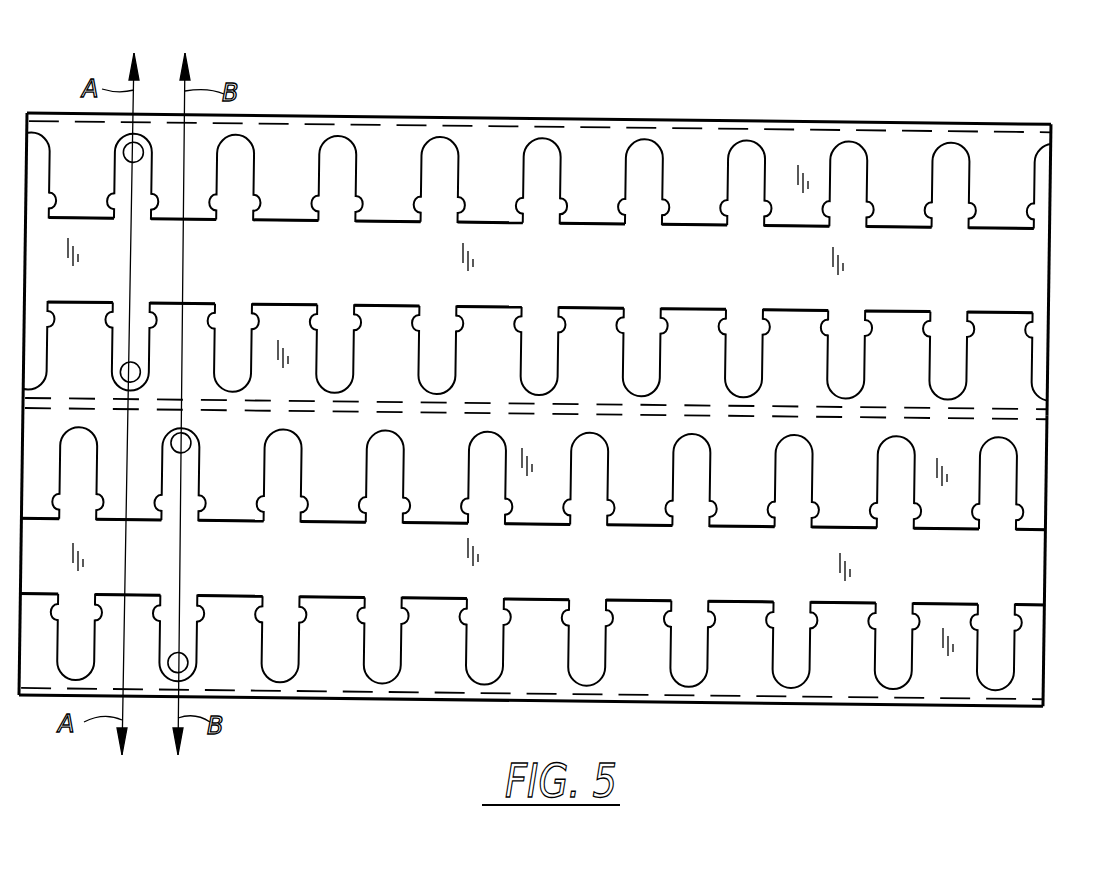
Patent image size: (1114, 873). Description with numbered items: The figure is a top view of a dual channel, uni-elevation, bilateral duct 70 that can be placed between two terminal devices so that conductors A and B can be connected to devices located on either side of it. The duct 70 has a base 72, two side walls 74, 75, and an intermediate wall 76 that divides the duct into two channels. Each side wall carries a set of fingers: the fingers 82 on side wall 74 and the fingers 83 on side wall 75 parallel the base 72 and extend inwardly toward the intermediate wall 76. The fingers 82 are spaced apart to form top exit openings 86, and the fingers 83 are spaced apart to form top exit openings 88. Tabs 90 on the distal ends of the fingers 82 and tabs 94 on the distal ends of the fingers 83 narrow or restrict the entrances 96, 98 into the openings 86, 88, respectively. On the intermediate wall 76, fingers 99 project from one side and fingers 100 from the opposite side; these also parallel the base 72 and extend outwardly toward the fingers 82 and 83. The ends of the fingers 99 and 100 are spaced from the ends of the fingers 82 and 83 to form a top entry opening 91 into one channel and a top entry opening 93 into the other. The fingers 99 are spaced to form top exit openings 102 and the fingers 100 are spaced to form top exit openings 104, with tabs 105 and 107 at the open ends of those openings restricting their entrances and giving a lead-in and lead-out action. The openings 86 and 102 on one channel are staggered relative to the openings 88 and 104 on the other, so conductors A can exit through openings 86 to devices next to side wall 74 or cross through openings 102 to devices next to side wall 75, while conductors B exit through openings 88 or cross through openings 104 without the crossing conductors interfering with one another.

The dual channel, uni-elevation, bilateral duct 70 is at (1050, 60).
The base 72 is at (848, 566).
The side wall 74 is at (720, 122).
The side wall 75 is at (548, 700).
The intermediate wall 76 is at (1005, 424).
The fingers 82 is at (802, 232).
The fingers 83 is at (548, 598).
The top exit openings 86 is at (943, 150).
The top exit openings 88 is at (887, 691).
The tabs 90 is at (836, 208).
The top entry opening 91 is at (1032, 271).
The top entry opening 93 is at (1020, 559).
The tabs 94 is at (800, 612).
The entrance 96 is at (950, 227).
The entrance 98 is at (690, 605).
The fingers 99 is at (672, 305).
The fingers 100 is at (515, 525).
The top exit openings 102 is at (732, 391).
The top exit openings 104 is at (366, 437).
The tabs 105 is at (757, 318).
The tabs 107 is at (370, 490).